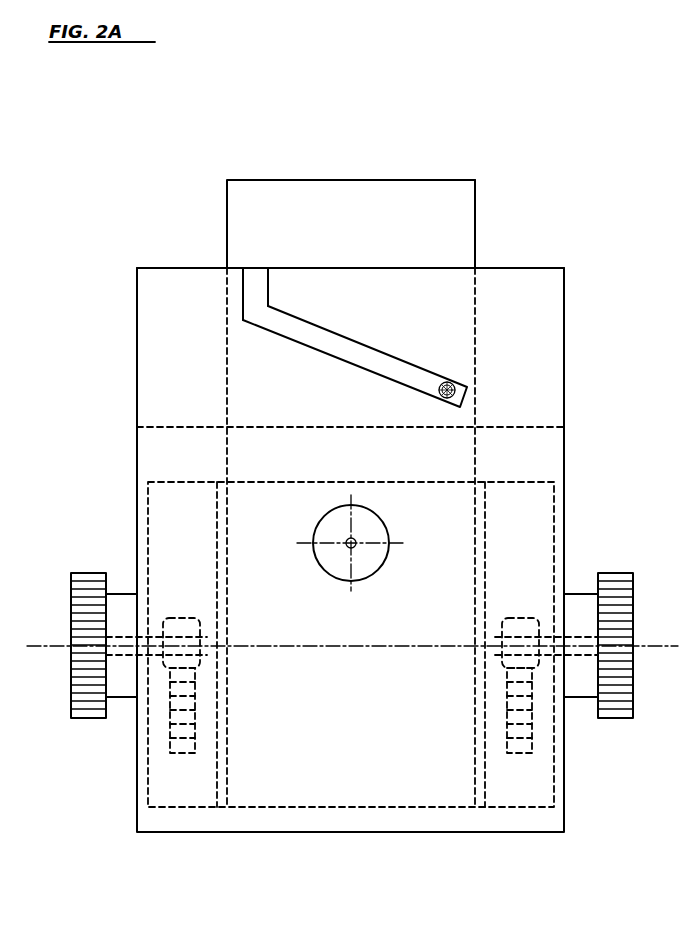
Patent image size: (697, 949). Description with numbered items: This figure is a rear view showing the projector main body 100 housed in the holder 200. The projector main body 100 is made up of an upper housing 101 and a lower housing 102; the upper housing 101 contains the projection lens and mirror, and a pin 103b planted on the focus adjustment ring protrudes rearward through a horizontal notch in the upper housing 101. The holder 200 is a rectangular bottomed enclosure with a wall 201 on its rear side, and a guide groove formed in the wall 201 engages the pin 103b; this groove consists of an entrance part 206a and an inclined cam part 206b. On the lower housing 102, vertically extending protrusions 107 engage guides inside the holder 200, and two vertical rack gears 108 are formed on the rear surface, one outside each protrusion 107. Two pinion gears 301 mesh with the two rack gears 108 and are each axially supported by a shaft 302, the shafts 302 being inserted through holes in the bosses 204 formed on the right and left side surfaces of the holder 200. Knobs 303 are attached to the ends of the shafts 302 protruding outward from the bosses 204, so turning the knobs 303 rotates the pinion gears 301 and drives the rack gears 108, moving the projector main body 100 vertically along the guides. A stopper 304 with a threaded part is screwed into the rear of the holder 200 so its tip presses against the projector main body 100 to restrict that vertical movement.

The projector main body 100 is at (215, 213).
The upper housing 101 is at (408, 190).
The lower housing 102 is at (165, 482).
The pin 103b is at (455, 383).
The protrusions 107 is at (228, 502).
The rack gears 108 is at (198, 733).
The holder 200 is at (576, 457).
The wall 201 is at (507, 280).
The bosses 204 is at (126, 594).
The entrance part 206a is at (257, 272).
The cam part 206b is at (343, 345).
The pinion gears 301 is at (187, 657).
The shafts 302 is at (205, 622).
The knobs 303 is at (87, 720).
The stopper 304 is at (358, 572).